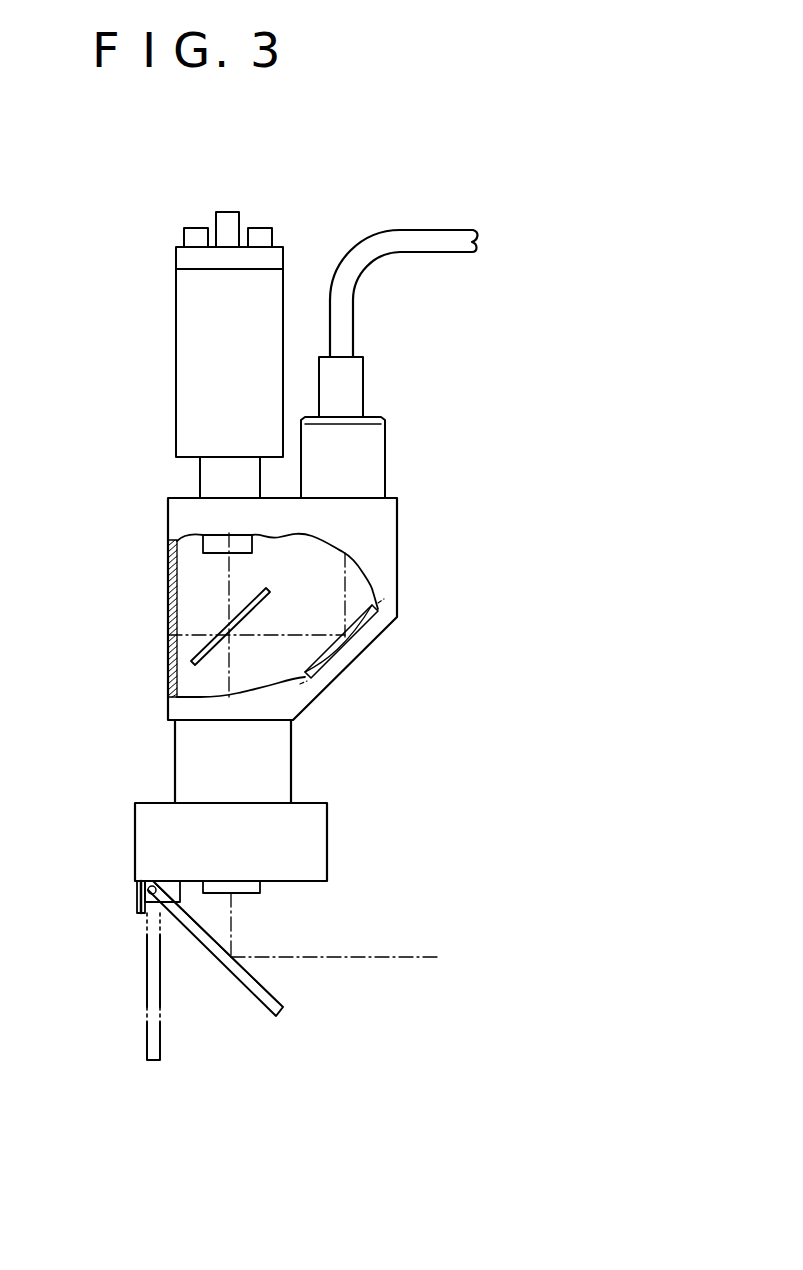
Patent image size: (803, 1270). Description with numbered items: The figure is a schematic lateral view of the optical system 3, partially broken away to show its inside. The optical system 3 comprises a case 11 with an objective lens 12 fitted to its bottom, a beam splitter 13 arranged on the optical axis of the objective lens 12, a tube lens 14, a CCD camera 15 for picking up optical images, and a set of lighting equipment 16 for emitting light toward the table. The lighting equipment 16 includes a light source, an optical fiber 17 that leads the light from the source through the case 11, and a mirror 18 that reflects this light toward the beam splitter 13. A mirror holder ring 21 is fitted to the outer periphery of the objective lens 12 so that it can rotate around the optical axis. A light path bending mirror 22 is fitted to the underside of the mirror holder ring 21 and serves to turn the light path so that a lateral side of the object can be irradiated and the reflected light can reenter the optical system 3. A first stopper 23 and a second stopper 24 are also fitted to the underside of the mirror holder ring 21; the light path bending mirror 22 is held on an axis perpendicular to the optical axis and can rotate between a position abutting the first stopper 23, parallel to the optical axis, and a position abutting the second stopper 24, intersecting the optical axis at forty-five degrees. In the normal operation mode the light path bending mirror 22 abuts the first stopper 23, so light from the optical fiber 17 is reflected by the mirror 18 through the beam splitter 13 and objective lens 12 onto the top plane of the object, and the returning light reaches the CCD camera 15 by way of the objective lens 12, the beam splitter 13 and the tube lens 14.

The optical system 3 is at (80, 251).
The case 11 is at (392, 550).
The objective lens 12 is at (262, 888).
The beam splitter 13 is at (210, 637).
The tube lens 14 is at (200, 543).
The CCD camera 15 is at (182, 397).
The lighting equipment 16 is at (440, 364).
The optical fiber 17 is at (348, 320).
The mirror 18 is at (345, 652).
The mirror holder ring 21 is at (320, 839).
The light path bending mirror 22 is at (260, 1005).
The first stopper 23 is at (135, 902).
The second stopper 24 is at (172, 883).